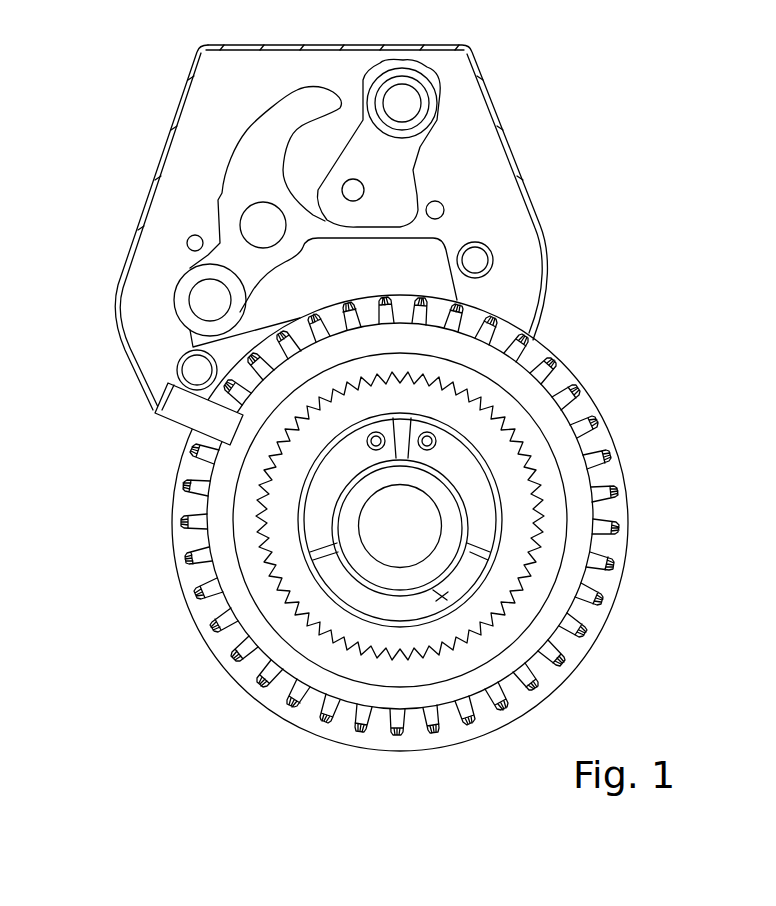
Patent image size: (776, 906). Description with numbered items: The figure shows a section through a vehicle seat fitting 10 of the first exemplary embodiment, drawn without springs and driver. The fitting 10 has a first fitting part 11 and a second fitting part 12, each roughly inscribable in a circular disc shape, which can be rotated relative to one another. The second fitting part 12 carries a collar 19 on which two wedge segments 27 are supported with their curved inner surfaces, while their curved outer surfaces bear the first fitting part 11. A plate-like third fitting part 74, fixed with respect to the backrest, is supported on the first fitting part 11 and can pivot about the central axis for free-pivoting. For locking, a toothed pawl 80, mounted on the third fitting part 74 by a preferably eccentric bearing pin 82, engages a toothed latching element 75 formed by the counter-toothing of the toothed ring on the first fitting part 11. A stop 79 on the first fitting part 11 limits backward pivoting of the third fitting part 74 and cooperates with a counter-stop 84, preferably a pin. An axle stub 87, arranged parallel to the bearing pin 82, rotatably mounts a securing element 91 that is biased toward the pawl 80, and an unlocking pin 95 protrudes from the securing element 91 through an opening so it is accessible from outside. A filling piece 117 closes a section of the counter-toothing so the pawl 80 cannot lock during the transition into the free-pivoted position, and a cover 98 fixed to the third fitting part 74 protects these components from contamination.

The fitting 10 is at (624, 102).
The first fitting part 11 is at (396, 492).
The second fitting part 12 is at (393, 563).
The collar 19 is at (357, 548).
The wedge segments 27 is at (490, 513).
The third fitting part 74 is at (505, 118).
The latching element 75 is at (385, 318).
The stop 79 is at (178, 412).
The pawl 80 is at (303, 280).
The bearing pin 82 is at (213, 300).
The counter-stop 84 is at (200, 367).
The axle stub 87 is at (403, 103).
The securing element 91 is at (413, 200).
The unlocking pin 95 is at (365, 188).
The cover 98 is at (180, 132).
The filling piece 117 is at (590, 403).